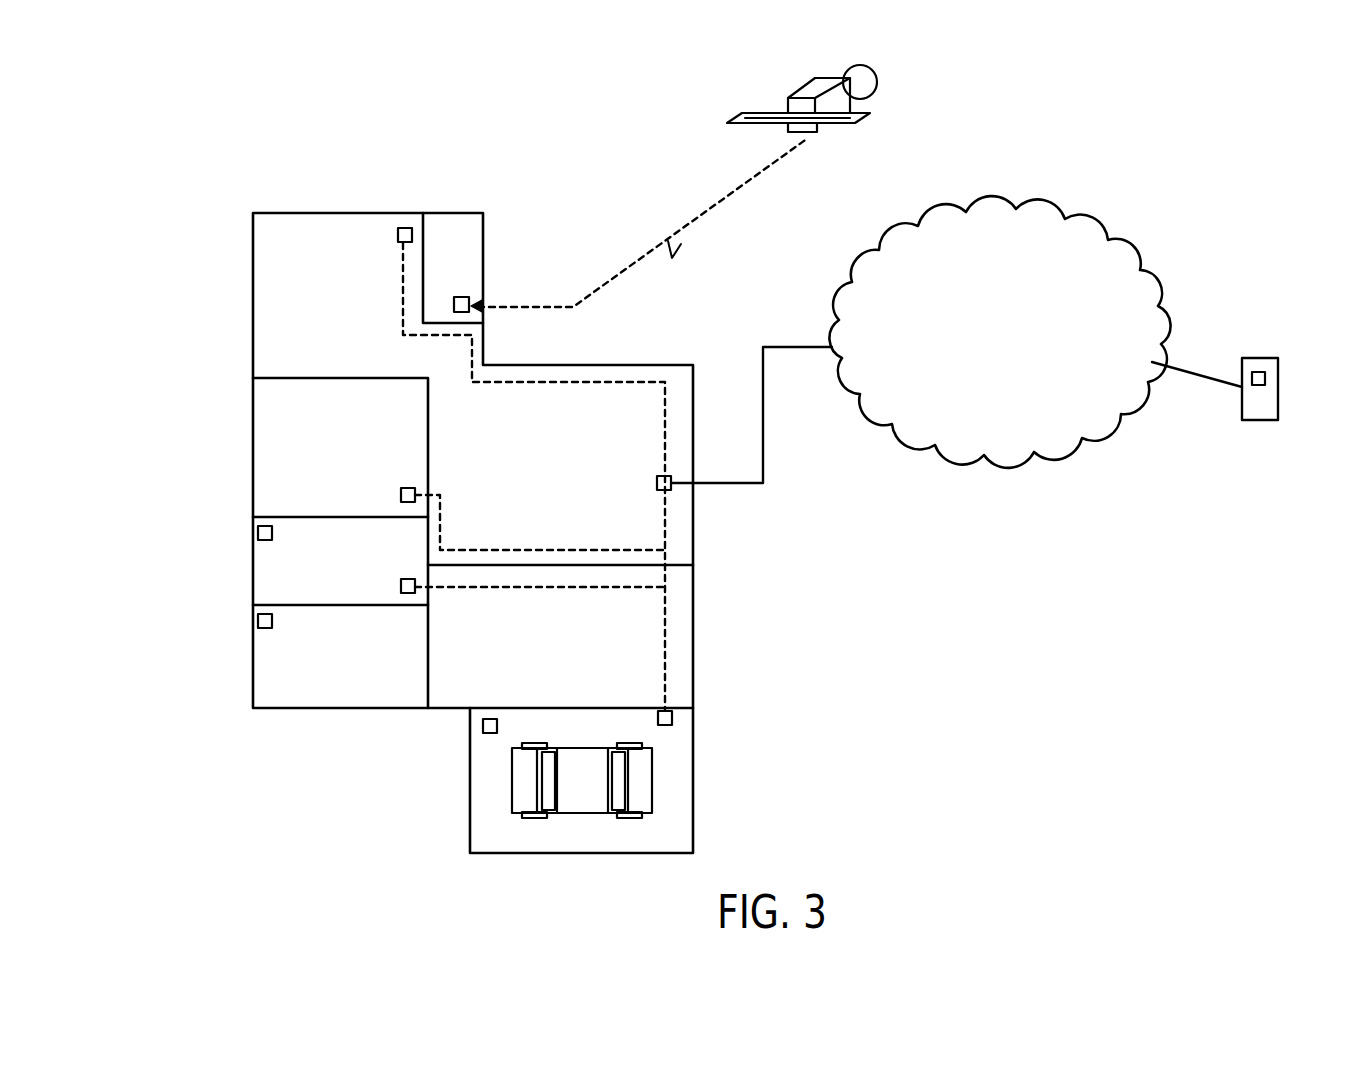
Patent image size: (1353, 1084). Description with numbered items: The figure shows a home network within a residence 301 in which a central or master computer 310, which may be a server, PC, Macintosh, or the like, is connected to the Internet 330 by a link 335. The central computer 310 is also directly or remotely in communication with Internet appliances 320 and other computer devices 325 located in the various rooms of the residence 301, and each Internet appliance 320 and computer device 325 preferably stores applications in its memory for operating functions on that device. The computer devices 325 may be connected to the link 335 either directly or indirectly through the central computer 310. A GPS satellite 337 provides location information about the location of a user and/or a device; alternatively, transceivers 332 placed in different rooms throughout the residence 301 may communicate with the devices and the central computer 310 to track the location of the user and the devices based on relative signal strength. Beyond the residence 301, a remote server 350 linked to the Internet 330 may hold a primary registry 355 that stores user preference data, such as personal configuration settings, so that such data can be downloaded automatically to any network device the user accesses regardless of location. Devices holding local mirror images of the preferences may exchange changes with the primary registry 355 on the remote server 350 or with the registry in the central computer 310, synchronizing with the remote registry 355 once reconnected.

The residence 301 is at (620, 365).
The central computer 310 is at (672, 487).
The Internet appliance 320 is at (360, 750).
The computer device 325 is at (527, 548).
The Internet 330 is at (1047, 213).
The transceiver 332 is at (415, 593).
The link 335 is at (803, 347).
The GPS satellite 337 is at (860, 118).
The remote server 350 is at (1263, 422).
The primary registry 355 is at (1253, 392).